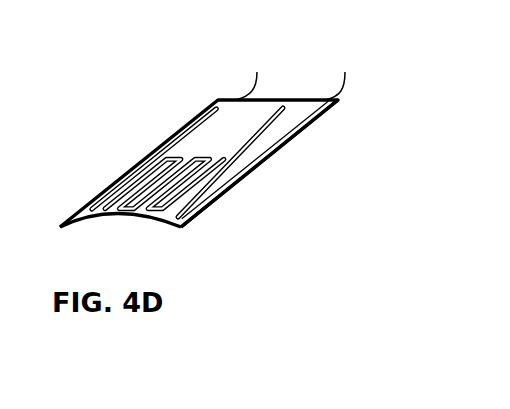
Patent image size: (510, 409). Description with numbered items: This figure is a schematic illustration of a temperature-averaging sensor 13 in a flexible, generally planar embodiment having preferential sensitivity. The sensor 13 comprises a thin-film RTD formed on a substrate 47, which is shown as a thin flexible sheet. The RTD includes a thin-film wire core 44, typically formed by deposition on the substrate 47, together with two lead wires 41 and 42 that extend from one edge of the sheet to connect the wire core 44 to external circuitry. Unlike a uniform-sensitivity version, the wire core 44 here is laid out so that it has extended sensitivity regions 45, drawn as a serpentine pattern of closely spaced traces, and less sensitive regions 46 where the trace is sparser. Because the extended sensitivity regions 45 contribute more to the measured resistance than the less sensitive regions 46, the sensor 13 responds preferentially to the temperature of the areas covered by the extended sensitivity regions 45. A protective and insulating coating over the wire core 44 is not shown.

The temperature-averaging sensor 13 is at (75, 144).
The lead wire 41 is at (270, 64).
The lead wire 42 is at (360, 62).
The thin-film wire core 44 is at (155, 145).
The extended sensitivity regions 45 is at (131, 189).
The less sensitive regions 46 is at (221, 123).
The substrate 47 is at (298, 162).